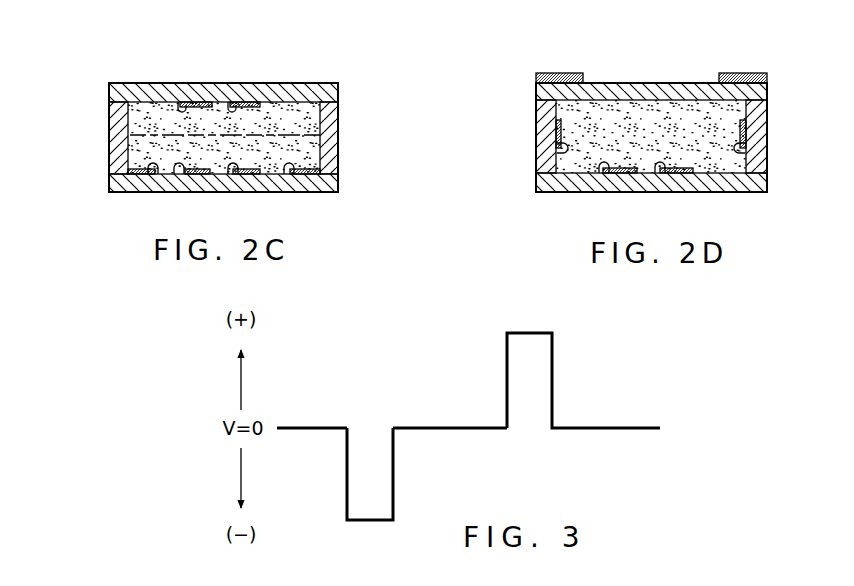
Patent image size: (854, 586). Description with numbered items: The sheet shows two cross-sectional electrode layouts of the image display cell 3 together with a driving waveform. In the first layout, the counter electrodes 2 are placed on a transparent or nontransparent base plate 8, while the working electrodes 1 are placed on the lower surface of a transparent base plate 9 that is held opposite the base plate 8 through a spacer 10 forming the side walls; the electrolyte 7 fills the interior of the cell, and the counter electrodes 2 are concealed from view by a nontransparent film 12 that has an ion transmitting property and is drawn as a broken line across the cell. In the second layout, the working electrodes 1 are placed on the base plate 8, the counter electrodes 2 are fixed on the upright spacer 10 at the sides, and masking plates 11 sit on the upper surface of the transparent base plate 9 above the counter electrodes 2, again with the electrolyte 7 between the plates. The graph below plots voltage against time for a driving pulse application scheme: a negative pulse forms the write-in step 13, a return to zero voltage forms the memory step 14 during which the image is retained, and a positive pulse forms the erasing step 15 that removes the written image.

In FIG. 2C, the working electrodes 1 is at (179, 108).
In FIG. 2D, the working electrodes 1 is at (604, 168).
In FIG. 2C, the counter electrodes 2 is at (157, 174).
In FIG. 2D, the counter electrodes 2 is at (560, 168).
In FIG. 2C, the cell 3 is at (100, 112).
In FIG. 2D, the cell 3 is at (523, 106).
In FIG. 2C, the electrolyte 7 is at (293, 112).
In FIG. 2D, the electrolyte 7 is at (663, 110).
In FIG. 2C, the base plate 8 is at (317, 188).
In FIG. 2D, the base plate 8 is at (733, 187).
In FIG. 2C, the transparent base plate 9 is at (137, 87).
In FIG. 2D, the transparent base plate 9 is at (620, 87).
In FIG. 2C, the spacer 10 is at (109, 156).
In FIG. 2D, the spacer 10 is at (545, 131).
In FIG. 2D, the masking plates 11 is at (558, 73).
In FIG. 2C, the nontransparent film 12 is at (300, 134).
In FIG. 3, the write-in step 13 is at (365, 523).
In FIG. 3, the memory step 14 is at (456, 433).
In FIG. 3, the erasing step 15 is at (524, 331).